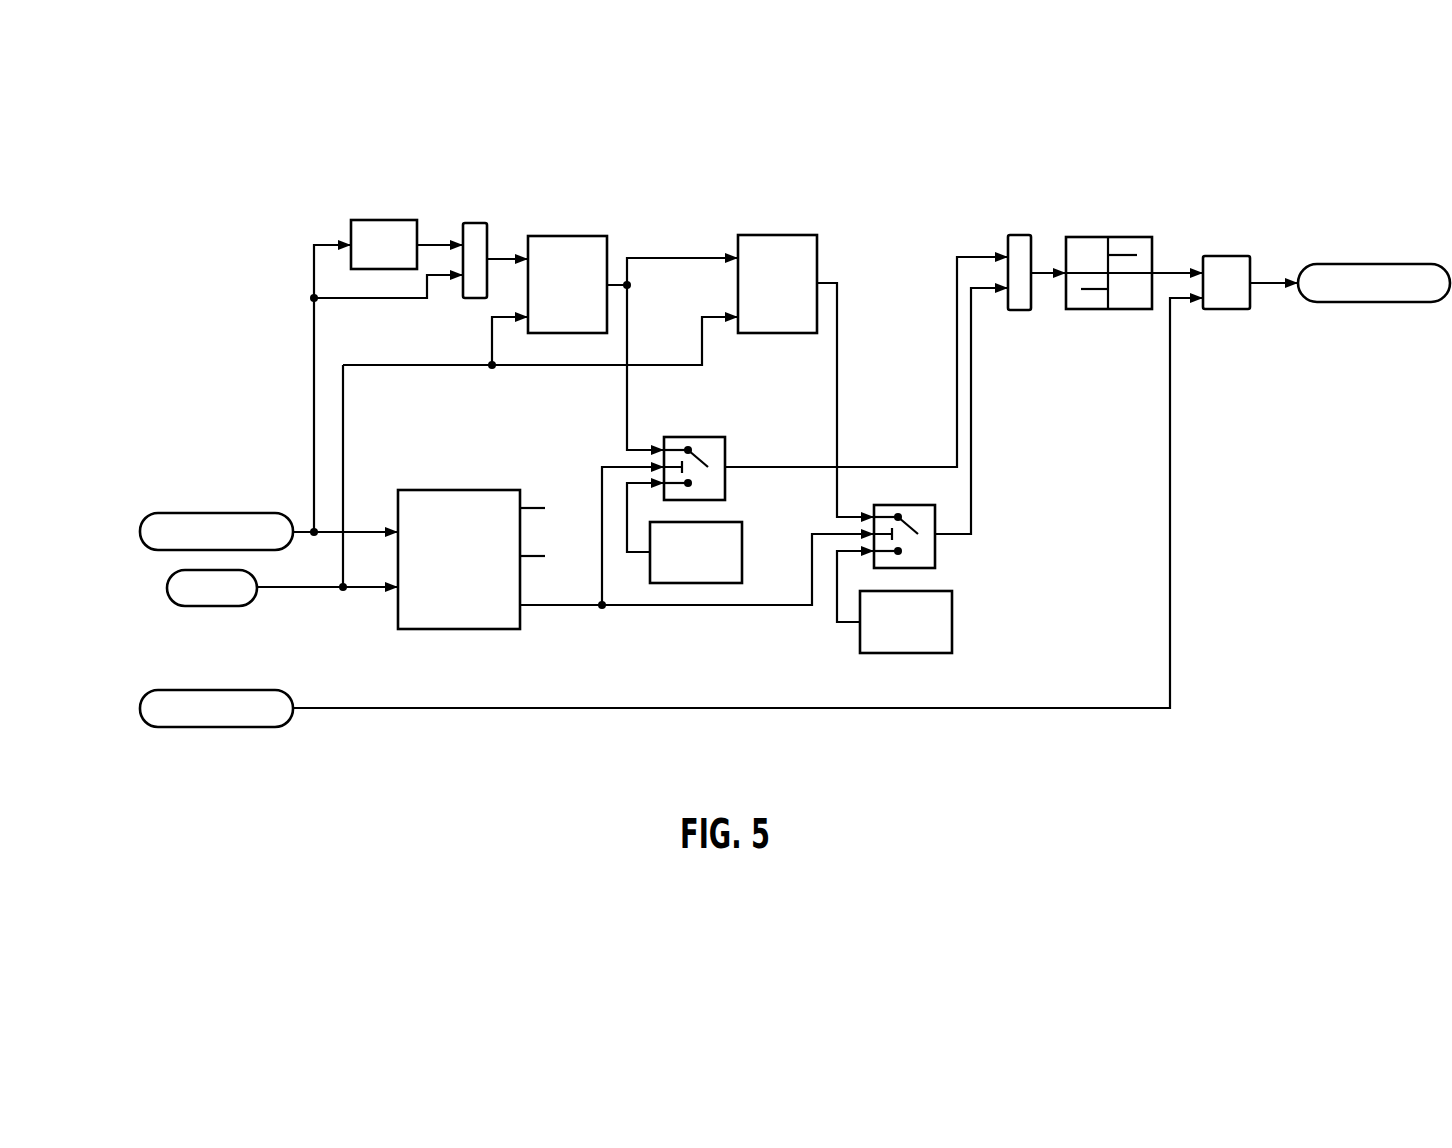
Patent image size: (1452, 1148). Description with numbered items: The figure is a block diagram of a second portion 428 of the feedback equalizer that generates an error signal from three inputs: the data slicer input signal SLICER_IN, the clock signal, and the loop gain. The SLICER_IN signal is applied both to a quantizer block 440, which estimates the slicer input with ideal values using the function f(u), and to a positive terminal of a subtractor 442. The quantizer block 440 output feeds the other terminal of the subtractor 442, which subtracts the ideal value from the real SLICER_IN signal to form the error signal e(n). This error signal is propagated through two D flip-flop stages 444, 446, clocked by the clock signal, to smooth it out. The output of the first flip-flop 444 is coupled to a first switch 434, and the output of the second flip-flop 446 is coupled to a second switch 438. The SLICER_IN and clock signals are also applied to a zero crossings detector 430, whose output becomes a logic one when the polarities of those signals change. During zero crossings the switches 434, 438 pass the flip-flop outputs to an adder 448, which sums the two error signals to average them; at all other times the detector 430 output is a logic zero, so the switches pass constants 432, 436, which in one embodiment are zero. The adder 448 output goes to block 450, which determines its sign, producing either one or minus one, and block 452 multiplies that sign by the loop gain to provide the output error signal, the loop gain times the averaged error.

The second portion 428 is at (963, 765).
The zero crossings detector 430 is at (522, 620).
The constant 432 is at (742, 545).
The first switch 434 is at (725, 482).
The constant 436 is at (952, 612).
The second switch 438 is at (935, 549).
The quantizer block 440 is at (364, 221).
The subtractor 442 is at (470, 223).
The first D flip-flop stage 444 is at (608, 242).
The second D flip-flop stage 446 is at (818, 240).
The adder 448 is at (1013, 235).
The sign block 450 is at (1125, 237).
The multiplier block 452 is at (1223, 256).